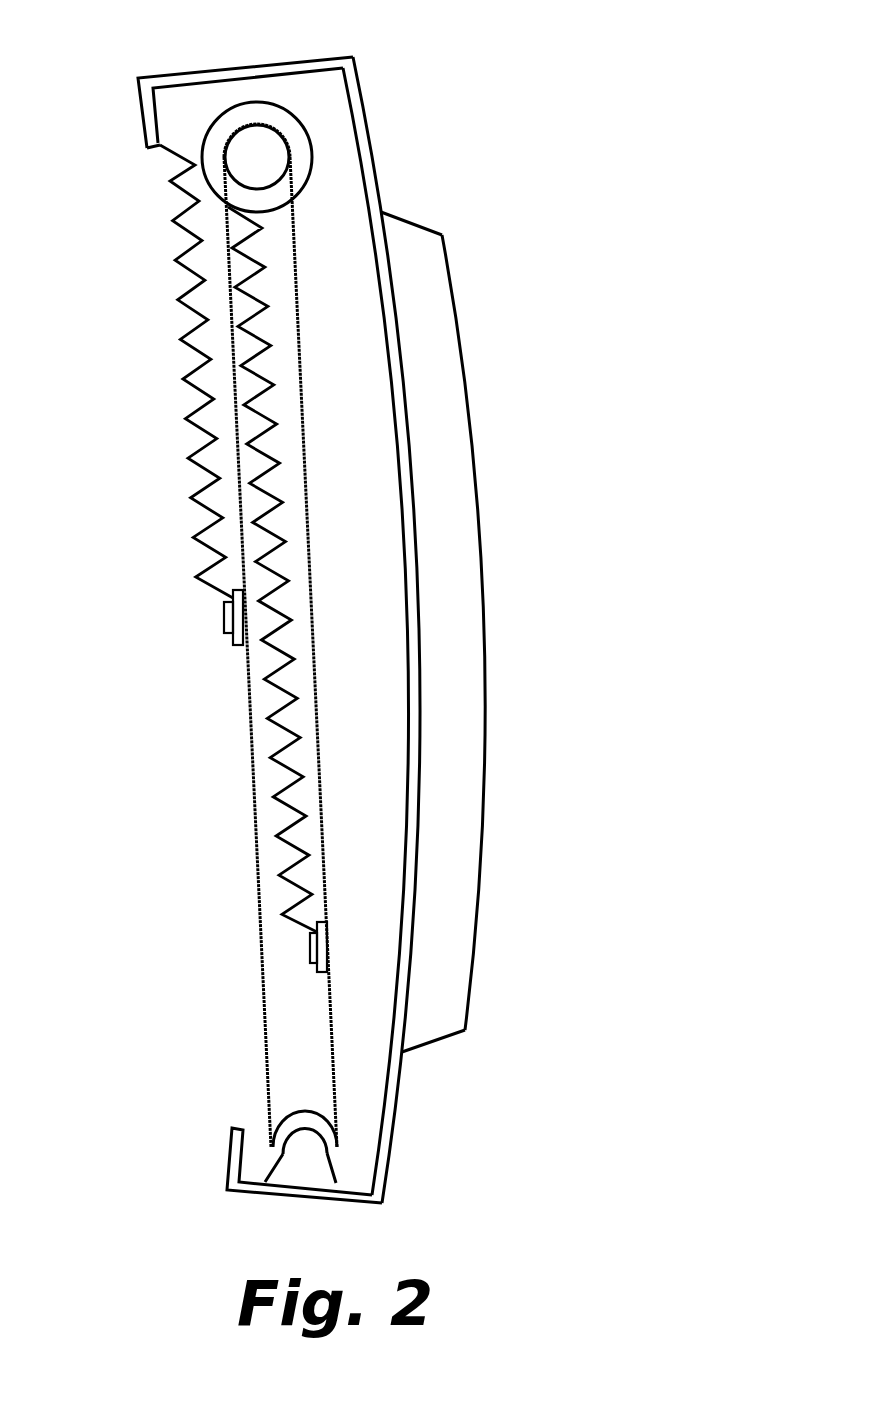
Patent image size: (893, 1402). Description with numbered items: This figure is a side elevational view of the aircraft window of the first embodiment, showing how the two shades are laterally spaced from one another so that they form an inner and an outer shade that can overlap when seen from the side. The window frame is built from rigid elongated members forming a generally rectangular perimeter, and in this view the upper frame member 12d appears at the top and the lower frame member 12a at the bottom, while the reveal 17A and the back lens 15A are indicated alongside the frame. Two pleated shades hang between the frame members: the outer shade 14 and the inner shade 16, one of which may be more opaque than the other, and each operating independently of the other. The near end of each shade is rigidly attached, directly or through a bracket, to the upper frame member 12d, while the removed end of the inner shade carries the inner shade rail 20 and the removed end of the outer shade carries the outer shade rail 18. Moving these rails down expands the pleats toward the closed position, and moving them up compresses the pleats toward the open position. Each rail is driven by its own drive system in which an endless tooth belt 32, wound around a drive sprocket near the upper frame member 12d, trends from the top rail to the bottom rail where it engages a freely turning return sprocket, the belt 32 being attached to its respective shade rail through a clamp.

The upper frame member 12d is at (270, 75).
The lower frame member 12a is at (310, 1200).
The reveal 17A is at (466, 607).
The back lens 15A is at (478, 610).
The inner shade 16 is at (187, 273).
The outer shade 14 is at (238, 423).
The endless tooth belt 32 is at (252, 778).
The inner shade rail 20 is at (240, 647).
The outer shade rail 18 is at (328, 975).